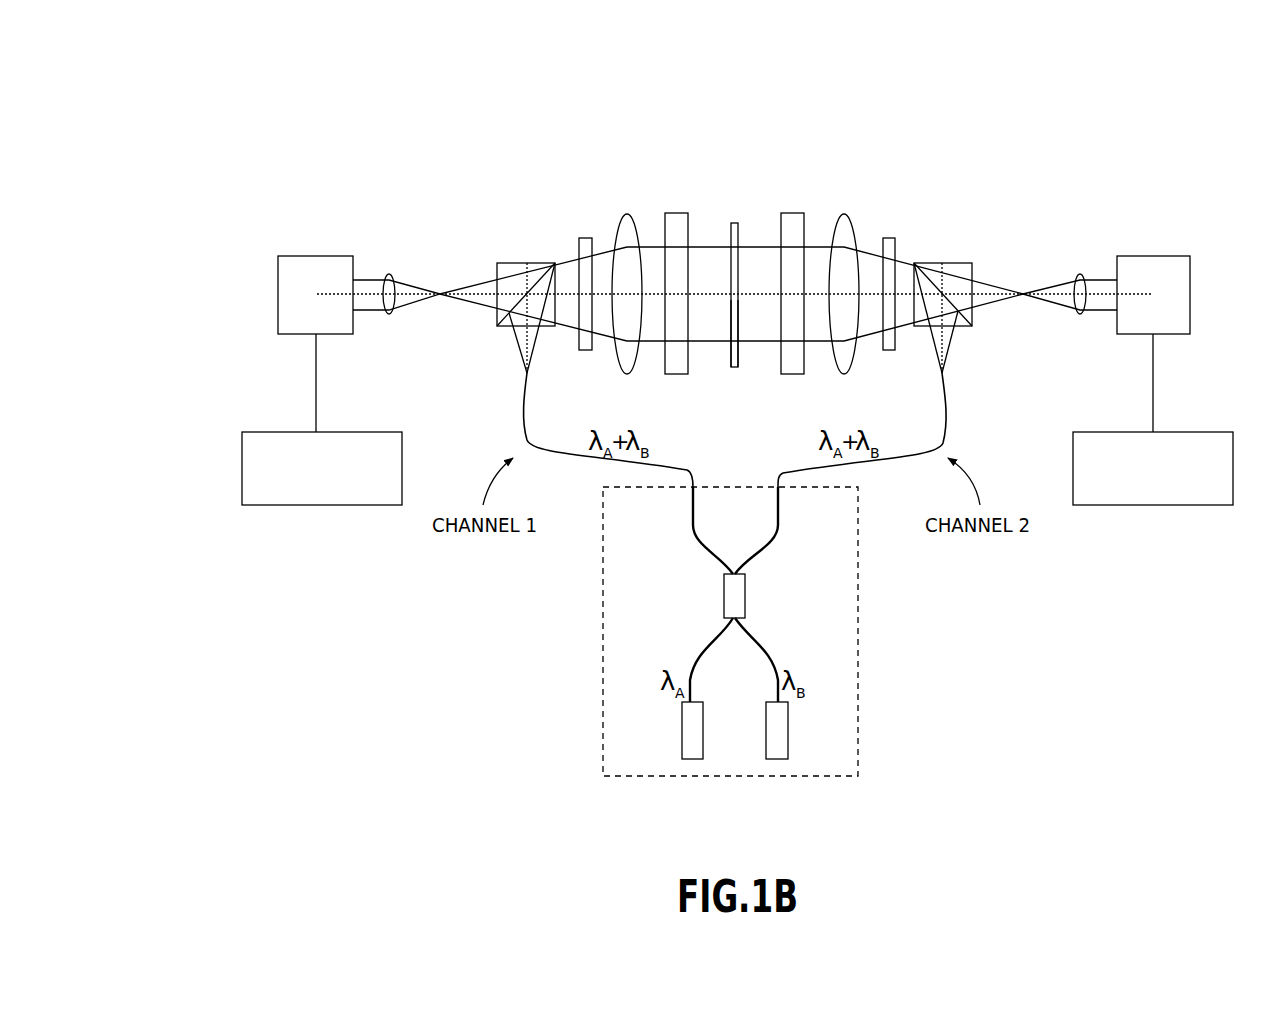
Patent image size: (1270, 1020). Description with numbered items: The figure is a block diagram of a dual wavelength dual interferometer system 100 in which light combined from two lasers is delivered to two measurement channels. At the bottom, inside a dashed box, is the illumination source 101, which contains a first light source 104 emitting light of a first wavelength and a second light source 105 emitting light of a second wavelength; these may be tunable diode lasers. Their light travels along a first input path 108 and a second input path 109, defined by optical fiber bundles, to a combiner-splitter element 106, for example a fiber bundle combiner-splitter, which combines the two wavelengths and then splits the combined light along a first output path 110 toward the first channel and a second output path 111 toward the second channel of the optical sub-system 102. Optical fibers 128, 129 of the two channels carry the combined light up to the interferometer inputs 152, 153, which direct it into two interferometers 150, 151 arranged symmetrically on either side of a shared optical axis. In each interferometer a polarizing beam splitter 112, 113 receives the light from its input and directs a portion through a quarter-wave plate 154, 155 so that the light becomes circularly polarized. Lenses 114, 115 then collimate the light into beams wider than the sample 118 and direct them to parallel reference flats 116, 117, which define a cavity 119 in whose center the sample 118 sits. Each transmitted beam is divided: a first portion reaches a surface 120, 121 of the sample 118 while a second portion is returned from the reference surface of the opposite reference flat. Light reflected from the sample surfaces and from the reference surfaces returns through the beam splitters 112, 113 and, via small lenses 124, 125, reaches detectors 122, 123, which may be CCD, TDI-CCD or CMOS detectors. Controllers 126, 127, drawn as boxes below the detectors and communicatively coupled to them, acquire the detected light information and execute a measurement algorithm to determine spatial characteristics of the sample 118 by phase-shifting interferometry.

The system 100 is at (248, 81).
The illumination source 101 is at (603, 630).
The optical sub-system 102 is at (1048, 95).
The first light source 104 is at (682, 725).
The second light source 105 is at (788, 720).
The combiner-splitter element 106 is at (724, 593).
The first input path 108 is at (700, 653).
The second input path 109 is at (770, 650).
The first output path 110 is at (697, 537).
The second output path 111 is at (772, 537).
The polarizing beam splitter 112 is at (527, 263).
The polarizing beam splitter 113 is at (947, 263).
The lens 114 is at (627, 214).
The lens 115 is at (845, 214).
The reference flat 116 is at (678, 213).
The reference flat 117 is at (793, 213).
The sample 118 is at (735, 223).
The cavity 119 is at (707, 177).
The test surface 120 is at (729, 358).
The surface 121 is at (740, 358).
The detector 122 is at (316, 256).
The detector 123 is at (1153, 256).
The lens 124 is at (389, 274).
The lens 125 is at (1080, 277).
The controller 126 is at (332, 479).
The controller 127 is at (1169, 479).
The optical fiber 128 is at (527, 403).
The optical fiber 129 is at (946, 410).
The interferometer 150 is at (458, 168).
The interferometer 151 is at (1015, 195).
The interferometer input 152 is at (508, 342).
The interferometer input 153 is at (962, 345).
The quarter-wave plate 154 is at (585, 238).
The quarter-wave plate 155 is at (887, 238).